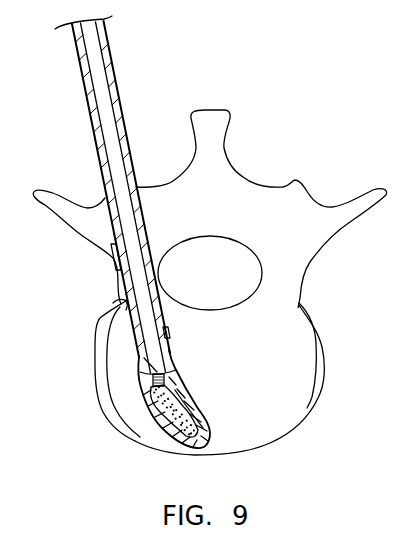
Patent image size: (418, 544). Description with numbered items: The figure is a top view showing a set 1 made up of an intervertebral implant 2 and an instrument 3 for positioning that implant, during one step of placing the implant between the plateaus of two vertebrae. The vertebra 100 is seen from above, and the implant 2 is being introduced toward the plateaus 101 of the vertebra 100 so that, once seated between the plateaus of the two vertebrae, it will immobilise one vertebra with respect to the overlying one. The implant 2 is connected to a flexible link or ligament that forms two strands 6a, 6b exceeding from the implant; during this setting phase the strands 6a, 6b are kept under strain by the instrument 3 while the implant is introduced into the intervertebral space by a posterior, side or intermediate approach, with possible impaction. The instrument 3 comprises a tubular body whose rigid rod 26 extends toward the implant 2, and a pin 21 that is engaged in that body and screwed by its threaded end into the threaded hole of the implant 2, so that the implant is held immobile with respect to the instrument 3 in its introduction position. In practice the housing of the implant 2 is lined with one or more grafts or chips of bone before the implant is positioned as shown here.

The set 1 is at (115, 347).
The intervertebral implant 2 is at (131, 403).
The instrument 3 is at (67, 78).
The strand 6a is at (118, 312).
The strand 6b is at (170, 376).
The pin 21 is at (133, 252).
The rigid rod 26 is at (118, 123).
The vertebra 100 is at (298, 147).
The plateau 101 is at (271, 334).